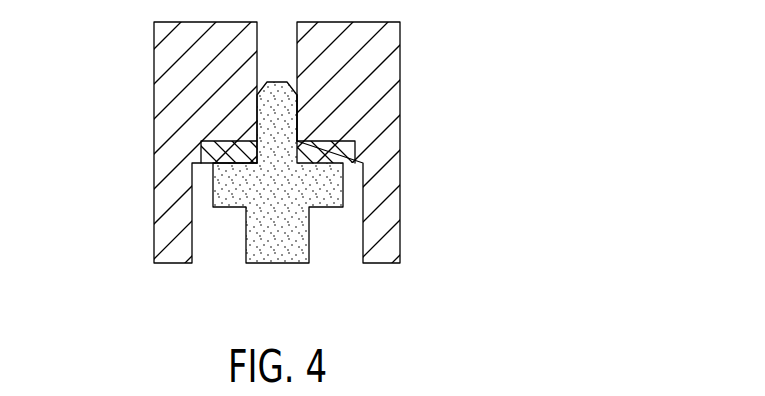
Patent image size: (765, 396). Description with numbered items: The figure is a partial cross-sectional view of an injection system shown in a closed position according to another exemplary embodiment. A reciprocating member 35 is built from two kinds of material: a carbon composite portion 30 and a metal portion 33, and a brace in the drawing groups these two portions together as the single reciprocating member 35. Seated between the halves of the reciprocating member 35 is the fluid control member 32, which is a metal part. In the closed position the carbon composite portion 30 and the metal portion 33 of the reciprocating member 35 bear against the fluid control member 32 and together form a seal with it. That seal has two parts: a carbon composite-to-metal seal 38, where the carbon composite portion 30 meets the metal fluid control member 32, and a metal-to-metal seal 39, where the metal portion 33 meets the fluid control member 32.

The reciprocating member 35 is at (90, 44).
The metal portion 33 is at (183, 72).
The carbon composite portion 30 is at (237, 152).
The fluid control member 32 is at (218, 192).
The carbon composite-to-metal seal 38 is at (302, 152).
The metal-to-metal seal 39 is at (298, 115).